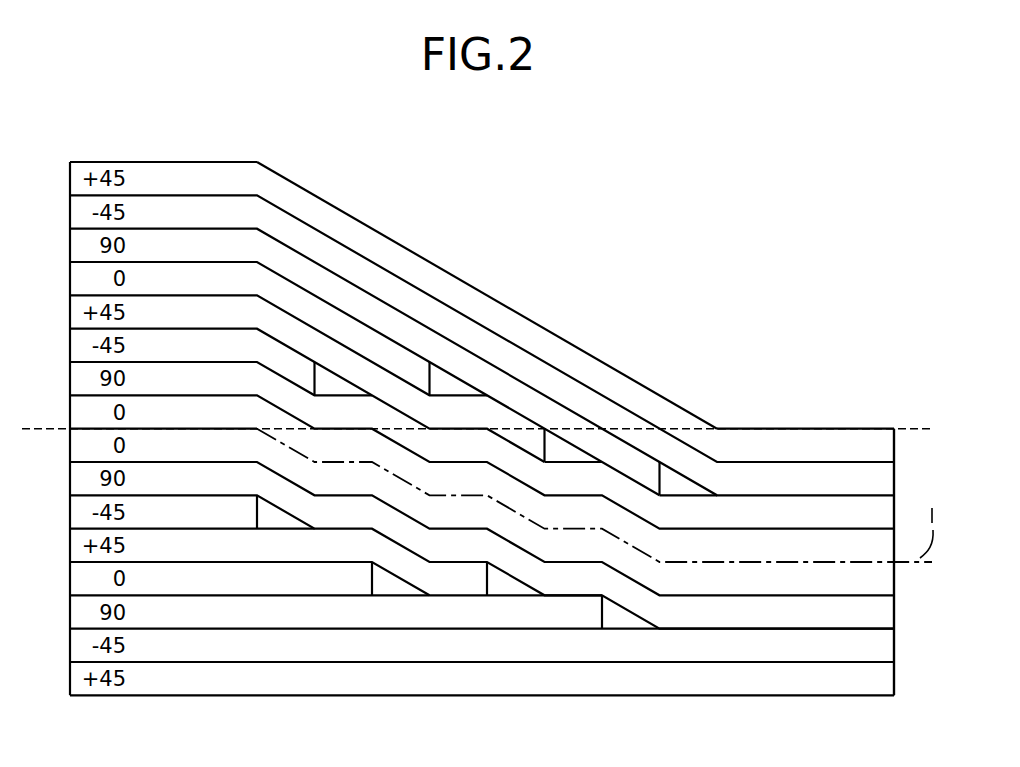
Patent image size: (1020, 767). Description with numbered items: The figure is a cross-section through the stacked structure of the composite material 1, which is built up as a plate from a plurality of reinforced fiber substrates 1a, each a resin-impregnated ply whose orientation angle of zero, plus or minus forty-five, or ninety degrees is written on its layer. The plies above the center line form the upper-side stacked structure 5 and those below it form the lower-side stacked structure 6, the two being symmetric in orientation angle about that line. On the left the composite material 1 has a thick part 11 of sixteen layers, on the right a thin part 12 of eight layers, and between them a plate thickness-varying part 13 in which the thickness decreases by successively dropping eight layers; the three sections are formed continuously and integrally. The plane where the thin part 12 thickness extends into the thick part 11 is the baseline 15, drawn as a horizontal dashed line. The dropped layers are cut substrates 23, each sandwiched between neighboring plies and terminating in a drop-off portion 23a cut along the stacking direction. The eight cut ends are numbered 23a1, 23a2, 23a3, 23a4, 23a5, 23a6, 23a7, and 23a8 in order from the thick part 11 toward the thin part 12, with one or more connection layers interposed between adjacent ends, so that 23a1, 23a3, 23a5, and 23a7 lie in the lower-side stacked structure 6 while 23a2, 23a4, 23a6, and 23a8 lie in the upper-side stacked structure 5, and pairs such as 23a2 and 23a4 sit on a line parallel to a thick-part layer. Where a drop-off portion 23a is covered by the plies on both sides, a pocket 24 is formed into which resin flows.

The composite material 1 is at (654, 216).
The reinforced fiber substrate 1a is at (834, 481).
The upper-side stacked structure 5 is at (62, 283).
The lower-side stacked structure 6 is at (62, 548).
The thick part 11 is at (133, 161).
The thin part 12 is at (800, 428).
The plate thickness-varying part 13 is at (526, 313).
The baseline 15 is at (694, 418).
The cut substrate 23 is at (369, 342).
The drop-off portion 23a is at (815, 298).
The drop-off portion 23a1 is at (258, 509).
The drop-off portion 23a2 is at (316, 380).
The drop-off portion 23a3 is at (373, 581).
The drop-off portion 23a4 is at (431, 380).
The drop-off portion 23a5 is at (488, 581).
The drop-off portion 23a6 is at (563, 451).
The drop-off portion 23a7 is at (603, 613).
The drop-off portion 23a8 is at (683, 484).
The pocket 24 is at (667, 482).